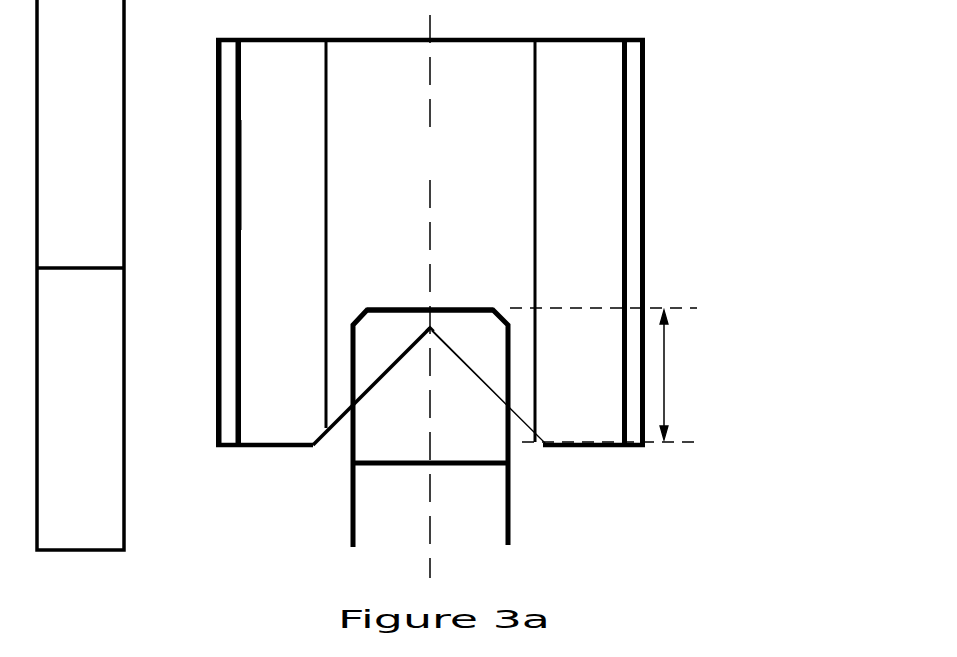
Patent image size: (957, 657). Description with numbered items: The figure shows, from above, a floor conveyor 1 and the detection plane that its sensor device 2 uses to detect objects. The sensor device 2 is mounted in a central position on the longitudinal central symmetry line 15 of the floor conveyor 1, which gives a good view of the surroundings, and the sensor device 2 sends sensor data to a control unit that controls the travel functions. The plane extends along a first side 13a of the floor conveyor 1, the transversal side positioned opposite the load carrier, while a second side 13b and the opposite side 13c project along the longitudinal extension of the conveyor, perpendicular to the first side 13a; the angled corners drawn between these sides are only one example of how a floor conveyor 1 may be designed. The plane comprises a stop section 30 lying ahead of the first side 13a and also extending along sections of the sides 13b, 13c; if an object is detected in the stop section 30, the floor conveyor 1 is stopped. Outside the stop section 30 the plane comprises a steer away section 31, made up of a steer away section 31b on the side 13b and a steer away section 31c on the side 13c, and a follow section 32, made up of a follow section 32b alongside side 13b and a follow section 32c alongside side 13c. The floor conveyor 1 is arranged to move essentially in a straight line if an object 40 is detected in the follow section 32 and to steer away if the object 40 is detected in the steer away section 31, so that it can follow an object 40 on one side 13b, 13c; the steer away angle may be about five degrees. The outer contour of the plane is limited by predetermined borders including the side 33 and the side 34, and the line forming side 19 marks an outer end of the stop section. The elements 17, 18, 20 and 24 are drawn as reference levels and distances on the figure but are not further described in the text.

The floor conveyor 1 is at (494, 391).
The sensor device 2 is at (440, 340).
The first side 13a is at (449, 310).
The second side 13b is at (353, 382).
The side 13c is at (512, 366).
The central symmetry line 15 is at (430, 530).
The upper reference level 17 is at (663, 308).
The lower reference level 18 is at (697, 442).
The side 19 is at (326, 335).
The gap 20 is at (240, 172).
The distance 24 is at (686, 375).
The stop section 30 is at (434, 296).
The steer away section 31 is at (430, 265).
The steer away section 31b is at (285, 242).
The steer away section 31c is at (578, 242).
The follow section 32 is at (228, 133).
The follow section 32b is at (228, 339).
The follow section 32c is at (632, 195).
The side 33 is at (221, 173).
The side 34 is at (407, 42).
The object 40 is at (123, 207).